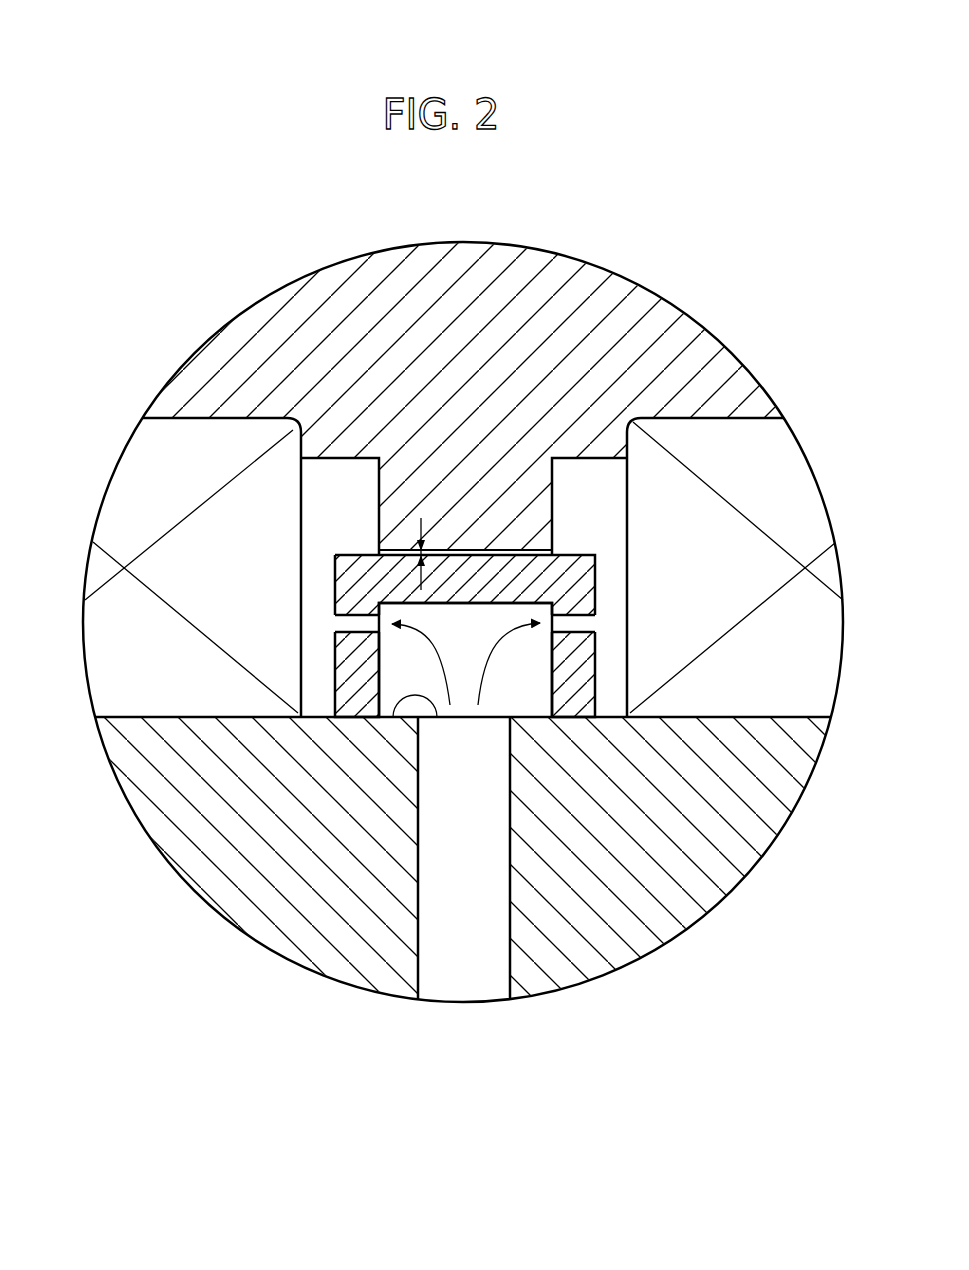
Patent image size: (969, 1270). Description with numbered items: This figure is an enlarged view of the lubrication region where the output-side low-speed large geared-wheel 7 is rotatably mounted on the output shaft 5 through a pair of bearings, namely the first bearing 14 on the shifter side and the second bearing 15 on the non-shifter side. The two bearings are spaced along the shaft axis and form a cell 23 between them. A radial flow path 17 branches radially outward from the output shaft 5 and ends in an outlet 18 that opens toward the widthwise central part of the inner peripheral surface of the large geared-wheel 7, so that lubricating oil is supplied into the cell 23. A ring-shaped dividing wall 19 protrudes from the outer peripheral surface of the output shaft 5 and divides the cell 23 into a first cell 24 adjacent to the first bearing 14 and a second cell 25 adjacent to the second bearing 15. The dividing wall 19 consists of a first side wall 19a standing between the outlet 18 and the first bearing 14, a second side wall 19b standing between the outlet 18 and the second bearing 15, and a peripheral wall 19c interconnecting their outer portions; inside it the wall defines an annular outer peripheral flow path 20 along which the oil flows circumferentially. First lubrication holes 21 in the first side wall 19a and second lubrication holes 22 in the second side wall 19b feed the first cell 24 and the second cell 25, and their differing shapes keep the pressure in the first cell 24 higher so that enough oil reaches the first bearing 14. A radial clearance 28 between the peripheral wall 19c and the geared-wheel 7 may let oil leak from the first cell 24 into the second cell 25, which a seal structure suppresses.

The output shaft 5 is at (715, 836).
The output-side low-speed large geared-wheel 7 is at (578, 297).
The first bearing 14 is at (790, 520).
The second bearing 15 is at (152, 470).
The radial flow path 17 is at (465, 985).
The outlet 18 is at (393, 717).
The dividing wall 19 is at (473, 743).
The first side wall 19a is at (580, 693).
The second side wall 19b is at (353, 683).
The peripheral wall 19c is at (531, 548).
The outer peripheral flow path 20 is at (520, 693).
The first lubrication hole 21 is at (580, 625).
The second lubrication hole 22 is at (347, 624).
The cell 23 is at (463, 419).
The first cell 24 is at (590, 468).
The second cell 25 is at (342, 478).
The radial clearance 28 is at (420, 548).